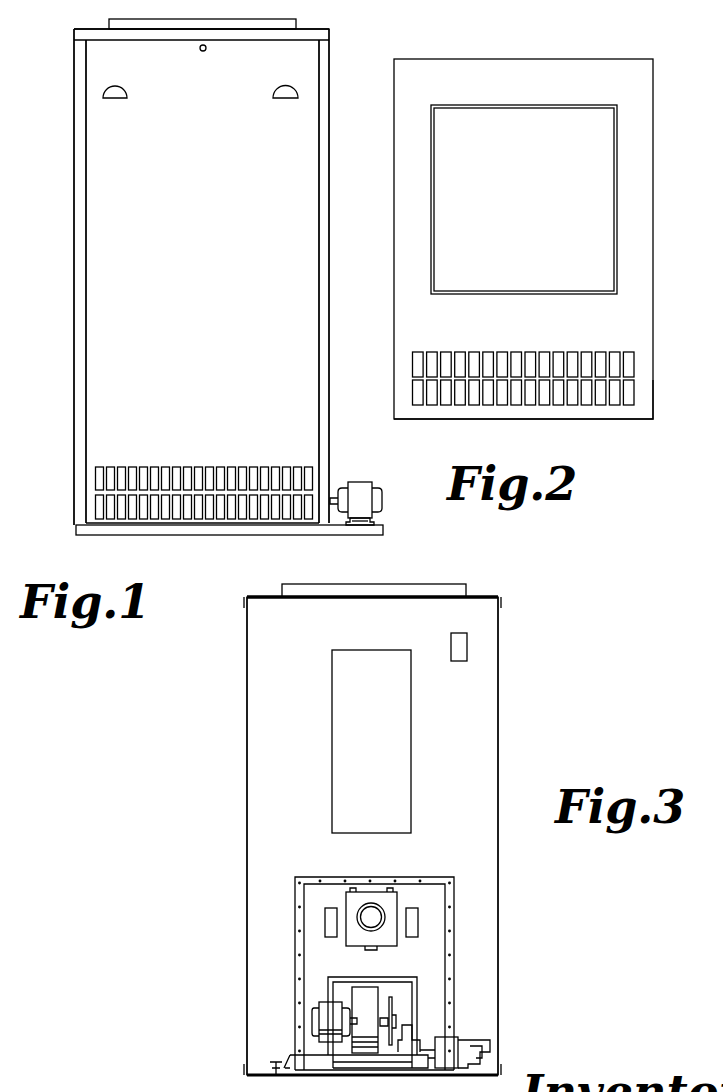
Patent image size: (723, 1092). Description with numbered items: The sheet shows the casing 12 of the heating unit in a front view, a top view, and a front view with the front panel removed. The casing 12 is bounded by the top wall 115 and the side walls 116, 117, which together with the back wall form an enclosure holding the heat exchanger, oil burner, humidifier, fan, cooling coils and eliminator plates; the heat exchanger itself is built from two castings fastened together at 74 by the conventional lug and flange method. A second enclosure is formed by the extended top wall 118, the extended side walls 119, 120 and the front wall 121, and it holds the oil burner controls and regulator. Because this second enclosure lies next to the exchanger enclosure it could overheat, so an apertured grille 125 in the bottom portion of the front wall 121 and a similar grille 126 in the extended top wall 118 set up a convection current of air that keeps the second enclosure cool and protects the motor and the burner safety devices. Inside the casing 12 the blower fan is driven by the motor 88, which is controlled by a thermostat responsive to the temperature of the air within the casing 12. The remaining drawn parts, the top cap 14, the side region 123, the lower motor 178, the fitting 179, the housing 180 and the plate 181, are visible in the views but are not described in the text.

In FIG. 1, the casing 12 is at (100, 275).
In FIG. 3, the casing 12 is at (258, 820).
In FIG. 1, the top cap 14 is at (167, 20).
In FIG. 3, the top cap 14 is at (357, 584).
In FIG. 3, the fastening of the heat exchanger castings 74 is at (432, 945).
In FIG. 1, the motor 88 is at (360, 492).
In FIG. 2, the top wall of the casing 115 is at (640, 318).
In FIG. 1, the side wall 116 is at (329, 233).
In FIG. 1, the side wall 117 is at (74, 180).
In FIG. 1, the extended top wall 118 is at (310, 29).
In FIG. 2, the extended top wall 118 is at (653, 403).
In FIG. 3, the extended top wall 118 is at (478, 596).
In FIG. 3, the extended side wall 119 is at (498, 748).
In FIG. 3, the extended side wall 120 is at (247, 740).
In FIG. 1, the front wall of the second enclosure 121 is at (113, 222).
In FIG. 3, the side panel 123 is at (482, 706).
In FIG. 1, the apertured grille 125 is at (100, 510).
In FIG. 2, the grille 126 is at (637, 371).
In FIG. 3, the motor 178 is at (327, 1008).
In FIG. 3, the fitting 179 is at (393, 1035).
In FIG. 3, the housing 180 is at (405, 1010).
In FIG. 3, the plate 181 is at (388, 1000).